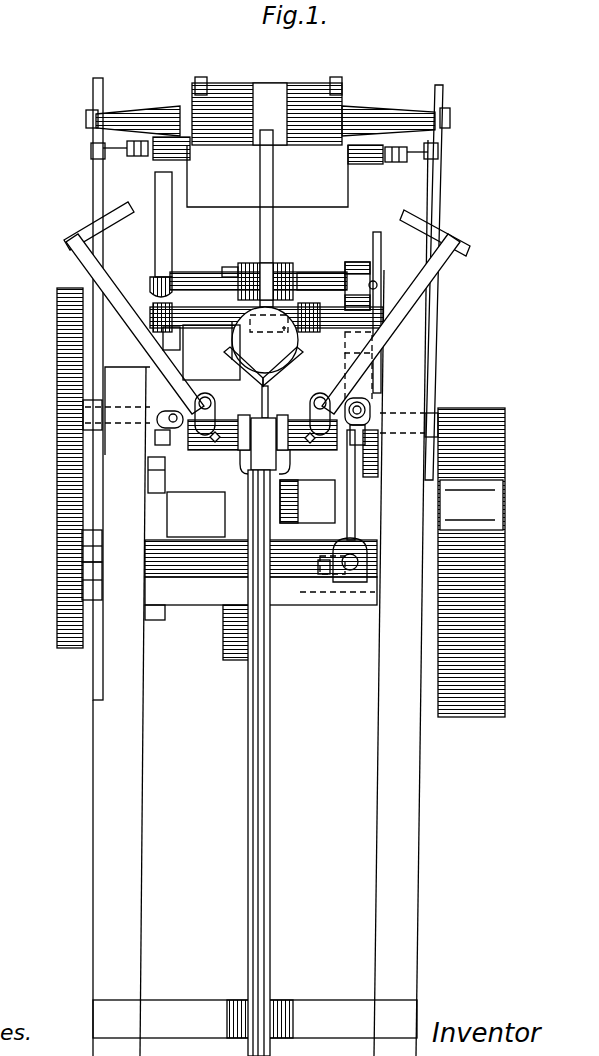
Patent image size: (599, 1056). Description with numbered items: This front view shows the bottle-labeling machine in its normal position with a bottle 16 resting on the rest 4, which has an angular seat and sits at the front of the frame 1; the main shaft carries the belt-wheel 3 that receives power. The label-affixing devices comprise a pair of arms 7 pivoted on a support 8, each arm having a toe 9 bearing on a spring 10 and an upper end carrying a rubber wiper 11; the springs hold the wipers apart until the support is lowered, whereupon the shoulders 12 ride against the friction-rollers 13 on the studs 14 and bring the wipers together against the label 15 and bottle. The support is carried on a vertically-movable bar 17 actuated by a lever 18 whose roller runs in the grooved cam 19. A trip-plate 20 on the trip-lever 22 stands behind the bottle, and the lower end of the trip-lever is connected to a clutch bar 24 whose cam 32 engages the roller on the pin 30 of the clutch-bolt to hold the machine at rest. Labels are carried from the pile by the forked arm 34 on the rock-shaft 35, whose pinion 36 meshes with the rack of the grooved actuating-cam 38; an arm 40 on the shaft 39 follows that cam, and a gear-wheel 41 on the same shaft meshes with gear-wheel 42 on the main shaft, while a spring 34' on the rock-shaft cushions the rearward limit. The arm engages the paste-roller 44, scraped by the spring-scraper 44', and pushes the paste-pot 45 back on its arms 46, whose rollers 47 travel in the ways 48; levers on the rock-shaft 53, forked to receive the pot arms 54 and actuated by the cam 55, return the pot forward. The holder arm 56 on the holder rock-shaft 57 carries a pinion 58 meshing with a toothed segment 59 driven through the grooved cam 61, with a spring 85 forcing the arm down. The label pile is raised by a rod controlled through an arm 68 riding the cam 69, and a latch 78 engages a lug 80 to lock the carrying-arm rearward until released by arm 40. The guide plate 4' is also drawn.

The frame 1 is at (135, 685).
The belt-wheel 3 is at (505, 500).
The rest 4 is at (283, 366).
The guide plate 4' is at (243, 366).
The arms 7 is at (136, 327).
The support 8 is at (258, 437).
The toe 9 is at (250, 397).
The spring 10 is at (265, 425).
The wipers 11 is at (111, 214).
The shoulders 12 is at (198, 403).
The friction-rollers 13 is at (155, 445).
The studs 14 is at (157, 423).
The label 15 is at (228, 272).
The bottle 16 is at (234, 337).
The vertically-movable bar 17 is at (270, 822).
The lever 18 is at (292, 462).
The grooved cam 19 is at (232, 662).
The plate 20 is at (298, 342).
The trip-lever 22 is at (356, 497).
The bar 24 is at (350, 572).
The pin 30 is at (325, 575).
The cam 32 is at (338, 578).
The forked arm 34 is at (271, 272).
The spring 34' is at (176, 234).
The rock-shaft 35 is at (313, 279).
The pinion 36 is at (355, 262).
The grooved actuating-cam 38 is at (356, 340).
The shaft 39 is at (197, 380).
The arm 40 is at (378, 413).
The gear-wheel 41 is at (65, 357).
The gear-wheel 42 is at (62, 545).
The paste-roller 44 is at (267, 114).
The spring-scraper 44' is at (270, 78).
The paste-pot 45 is at (267, 176).
The arms 46 is at (172, 159).
The rollers 47 is at (142, 157).
The ways 48 is at (103, 151).
The rock-shaft 53 is at (96, 188).
The arms 54 is at (138, 115).
The cam 55 is at (72, 580).
The arm 56 is at (262, 226).
The holder rock-shaft 57 is at (205, 318).
The pinion 58 is at (152, 313).
The toothed segment 59 is at (153, 338).
The grooved cam 61 is at (181, 352).
The arm 68 is at (165, 467).
The cam 69 is at (167, 520).
The latch 78 is at (376, 234).
The lug 80 is at (378, 285).
The spring 85 is at (272, 334).